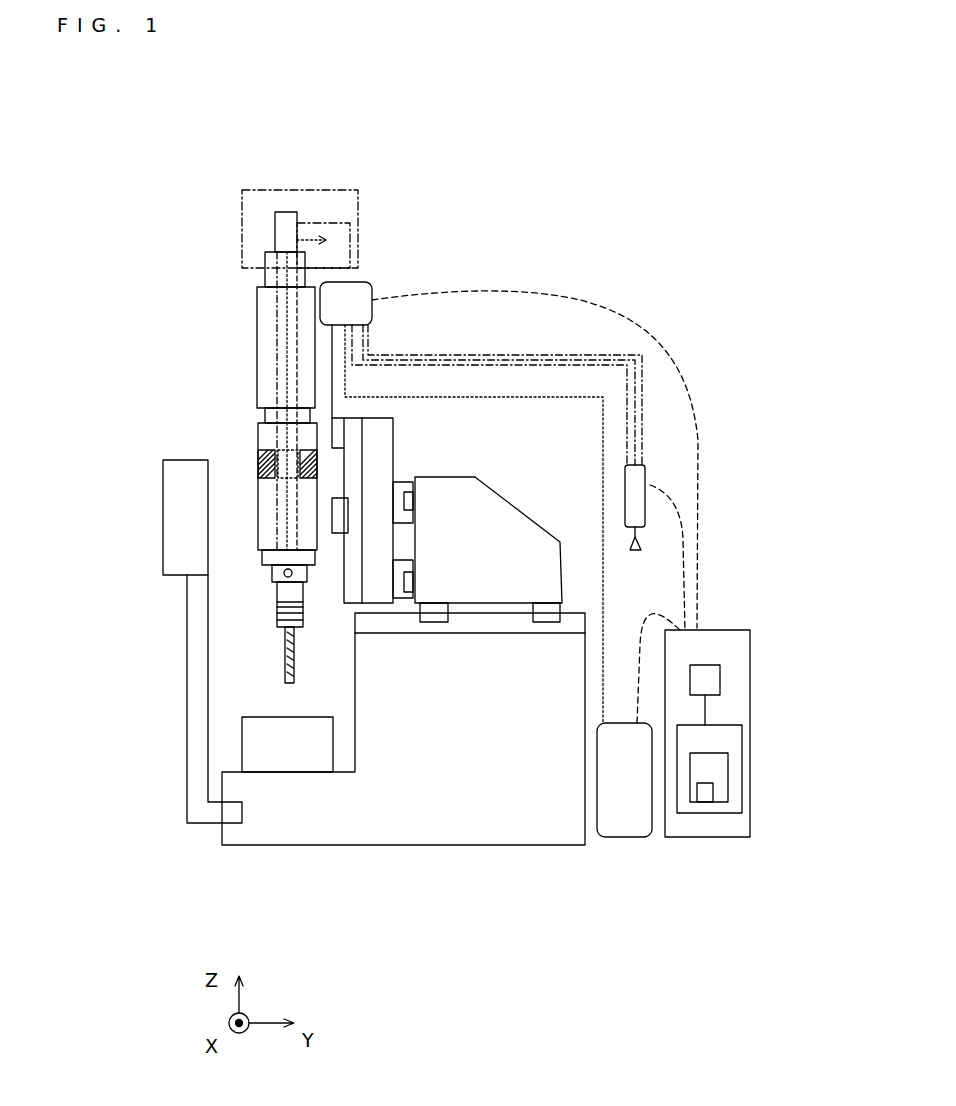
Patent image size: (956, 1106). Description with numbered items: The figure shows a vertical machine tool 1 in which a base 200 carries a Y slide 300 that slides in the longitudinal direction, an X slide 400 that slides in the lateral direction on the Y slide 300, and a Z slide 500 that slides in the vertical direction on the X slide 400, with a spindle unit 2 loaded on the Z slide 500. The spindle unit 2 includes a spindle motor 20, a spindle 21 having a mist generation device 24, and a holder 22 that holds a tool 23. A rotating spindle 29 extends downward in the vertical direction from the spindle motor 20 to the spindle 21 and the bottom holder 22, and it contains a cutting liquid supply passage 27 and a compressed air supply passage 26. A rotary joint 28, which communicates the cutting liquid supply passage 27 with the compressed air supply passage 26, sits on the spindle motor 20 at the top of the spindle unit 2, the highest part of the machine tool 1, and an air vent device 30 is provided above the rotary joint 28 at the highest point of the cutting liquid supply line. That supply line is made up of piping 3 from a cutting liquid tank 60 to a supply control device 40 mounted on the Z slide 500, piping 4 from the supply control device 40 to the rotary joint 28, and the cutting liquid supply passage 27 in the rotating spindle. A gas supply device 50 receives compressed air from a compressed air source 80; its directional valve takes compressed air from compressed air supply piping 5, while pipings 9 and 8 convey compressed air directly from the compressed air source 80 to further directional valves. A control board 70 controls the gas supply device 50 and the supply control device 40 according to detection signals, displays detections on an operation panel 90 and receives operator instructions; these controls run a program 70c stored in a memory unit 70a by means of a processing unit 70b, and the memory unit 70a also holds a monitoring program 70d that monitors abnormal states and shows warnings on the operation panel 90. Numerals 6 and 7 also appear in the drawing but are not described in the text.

The machine tool 1 is at (441, 192).
The spindle unit 2 is at (214, 370).
The piping 3 is at (562, 397).
The piping 4 is at (353, 268).
The compressed air supply piping 5 is at (505, 358).
The tool storage region 6 is at (358, 232).
The tool 7 is at (300, 212).
The piping 8 is at (540, 360).
The piping 9 is at (573, 365).
The spindle motor 20 is at (257, 305).
The spindle 21 is at (260, 487).
The holder 22 is at (275, 598).
The tool 23 is at (287, 662).
The mist generation device 24 is at (277, 543).
The compressed air supply passage 26 is at (277, 343).
The cutting liquid supply passage 27 is at (277, 375).
The rotary joint 28 is at (265, 269).
The rotating spindle 29 is at (262, 455).
The air vent device 30 is at (275, 213).
The supply control device 40 is at (372, 287).
The gas supply device 50 is at (647, 475).
The cutting liquid tank 60 is at (616, 840).
The control board 70 is at (747, 635).
The memory unit 70a is at (742, 790).
The processing unit 70b is at (720, 684).
The program 70c is at (728, 800).
The monitoring program 70d is at (697, 805).
The compressed air source 80 is at (645, 543).
The operation panel 90 is at (173, 473).
The base 200 is at (482, 828).
The Y slide 300 is at (497, 503).
The X slide 400 is at (393, 467).
The Z slide 500 is at (323, 370).